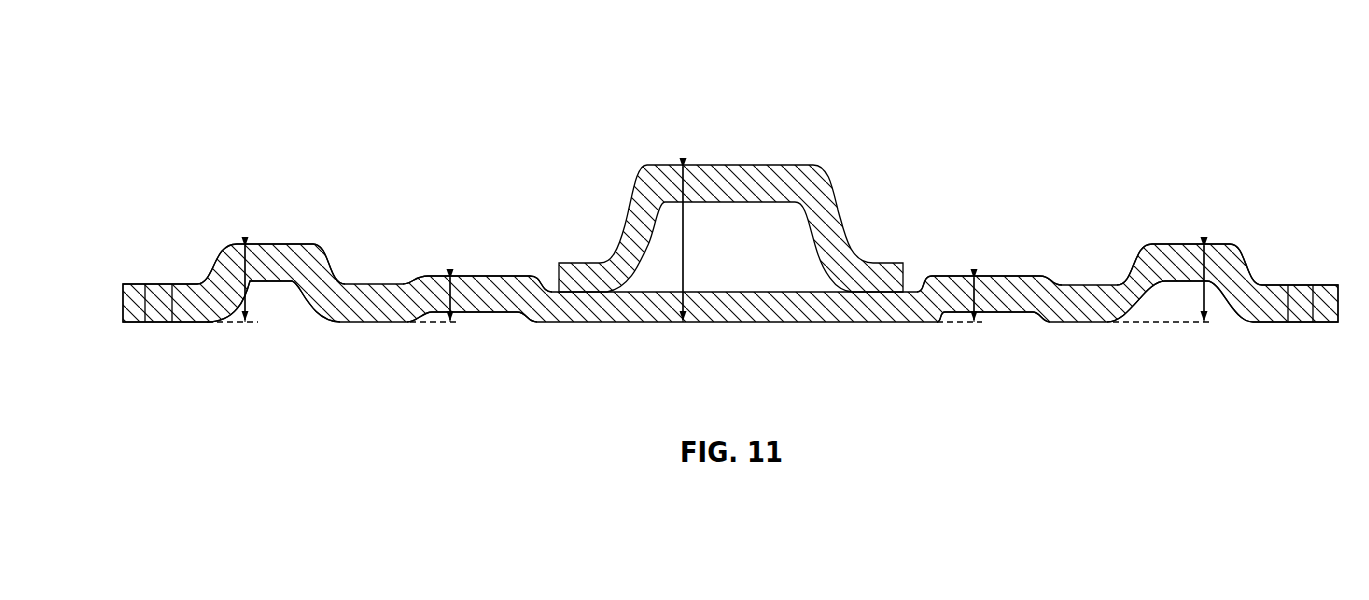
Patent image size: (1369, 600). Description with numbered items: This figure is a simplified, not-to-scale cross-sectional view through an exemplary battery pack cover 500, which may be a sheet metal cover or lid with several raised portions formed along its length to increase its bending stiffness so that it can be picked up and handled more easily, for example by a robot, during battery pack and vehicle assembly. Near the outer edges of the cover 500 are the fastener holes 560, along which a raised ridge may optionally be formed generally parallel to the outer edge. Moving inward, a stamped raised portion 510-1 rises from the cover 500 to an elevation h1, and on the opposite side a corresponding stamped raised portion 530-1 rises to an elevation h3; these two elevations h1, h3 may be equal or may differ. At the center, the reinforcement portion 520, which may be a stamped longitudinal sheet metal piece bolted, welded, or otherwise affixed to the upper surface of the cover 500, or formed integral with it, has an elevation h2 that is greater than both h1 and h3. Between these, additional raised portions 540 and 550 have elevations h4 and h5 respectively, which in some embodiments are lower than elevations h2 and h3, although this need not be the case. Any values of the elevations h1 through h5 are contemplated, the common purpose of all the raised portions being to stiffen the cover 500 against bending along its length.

The cover 500 is at (160, 88).
The raised portion 510-1 is at (267, 244).
The reinforcement portion 520 is at (733, 190).
The raised portion 530-1 is at (1188, 244).
The raised portion 540 is at (480, 276).
The raised portion 550 is at (1000, 276).
The fastener holes 560 is at (163, 284).
The elevation h1 is at (252, 300).
The elevation h2 is at (687, 245).
The elevation h3 is at (1197, 292).
The elevation h4 is at (457, 297).
The elevation h5 is at (985, 300).